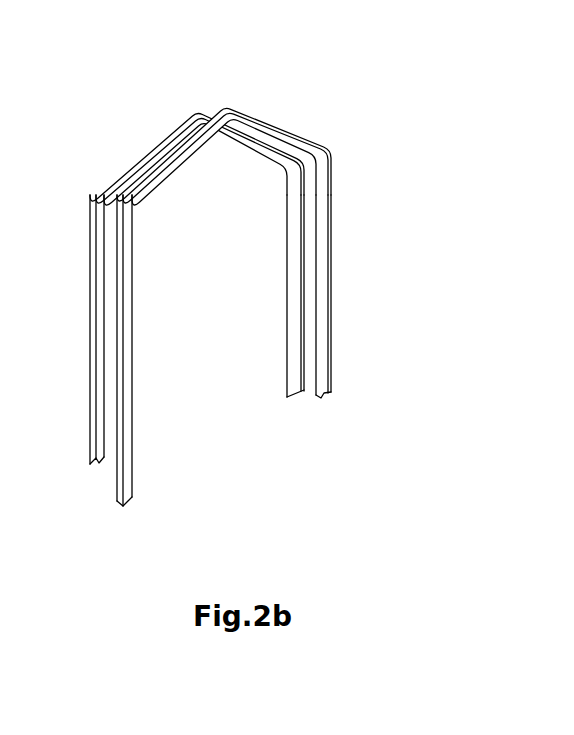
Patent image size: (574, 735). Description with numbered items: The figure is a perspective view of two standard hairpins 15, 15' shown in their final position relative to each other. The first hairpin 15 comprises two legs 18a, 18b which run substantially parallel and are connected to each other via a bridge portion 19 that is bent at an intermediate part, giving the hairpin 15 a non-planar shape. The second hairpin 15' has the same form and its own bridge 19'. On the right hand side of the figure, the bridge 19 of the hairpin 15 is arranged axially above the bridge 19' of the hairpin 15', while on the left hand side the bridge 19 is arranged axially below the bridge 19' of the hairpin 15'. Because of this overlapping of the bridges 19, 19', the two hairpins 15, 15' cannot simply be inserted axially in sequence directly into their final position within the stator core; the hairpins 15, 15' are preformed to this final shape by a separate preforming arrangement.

The hairpin 15 is at (282, 304).
The second hairpin 15' is at (191, 249).
The bridge portion 19 is at (224, 143).
The bridge 19' is at (197, 167).
The leg 18a is at (130, 416).
The leg 18b is at (324, 340).